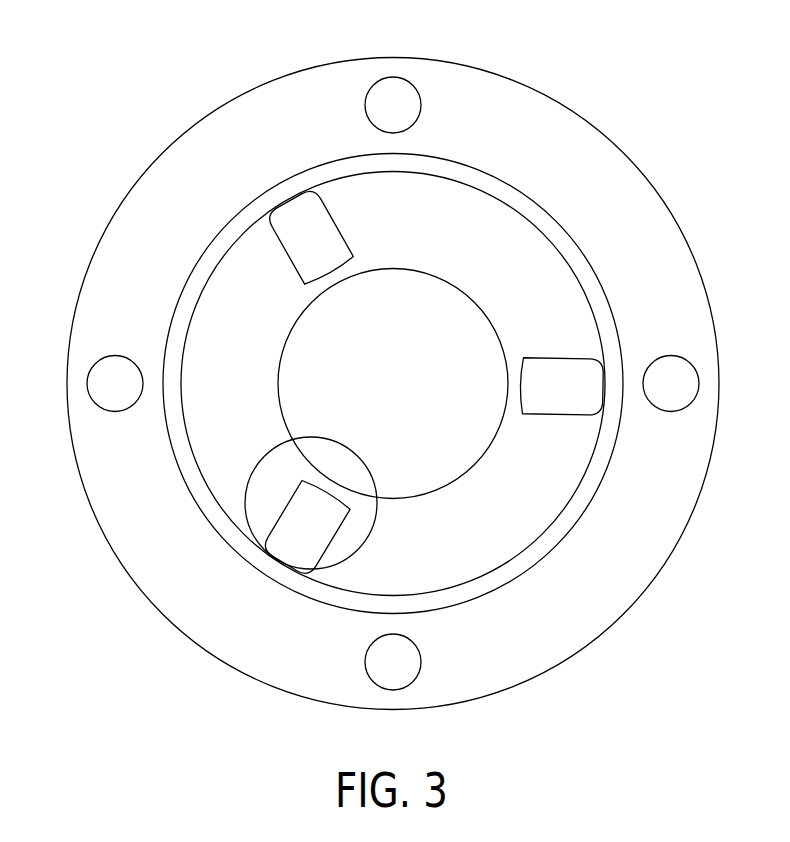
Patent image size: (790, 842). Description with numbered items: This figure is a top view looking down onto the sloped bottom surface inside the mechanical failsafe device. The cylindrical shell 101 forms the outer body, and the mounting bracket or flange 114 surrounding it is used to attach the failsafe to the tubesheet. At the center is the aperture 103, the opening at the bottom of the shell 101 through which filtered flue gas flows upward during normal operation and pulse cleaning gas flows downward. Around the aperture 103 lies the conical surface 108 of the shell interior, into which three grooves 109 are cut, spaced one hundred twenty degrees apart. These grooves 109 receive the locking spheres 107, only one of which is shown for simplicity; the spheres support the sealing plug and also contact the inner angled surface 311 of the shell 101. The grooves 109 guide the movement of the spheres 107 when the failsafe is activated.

The mounting bracket or flange 114 is at (127, 280).
The conical surface 108 is at (483, 538).
The aperture 103 is at (423, 323).
The grooves 109 is at (562, 360).
The cylindrical shell 101 is at (260, 203).
The locking spheres 107 is at (352, 530).
The inner angled surface 311 is at (250, 543).